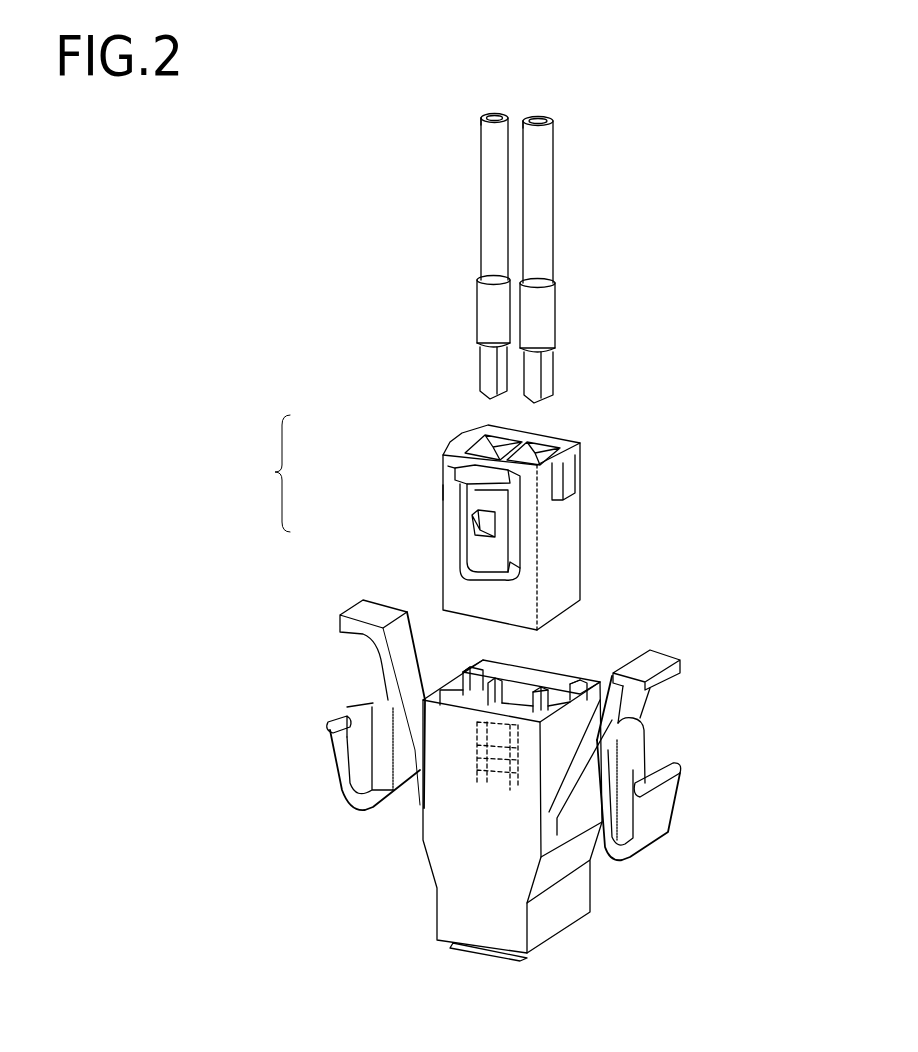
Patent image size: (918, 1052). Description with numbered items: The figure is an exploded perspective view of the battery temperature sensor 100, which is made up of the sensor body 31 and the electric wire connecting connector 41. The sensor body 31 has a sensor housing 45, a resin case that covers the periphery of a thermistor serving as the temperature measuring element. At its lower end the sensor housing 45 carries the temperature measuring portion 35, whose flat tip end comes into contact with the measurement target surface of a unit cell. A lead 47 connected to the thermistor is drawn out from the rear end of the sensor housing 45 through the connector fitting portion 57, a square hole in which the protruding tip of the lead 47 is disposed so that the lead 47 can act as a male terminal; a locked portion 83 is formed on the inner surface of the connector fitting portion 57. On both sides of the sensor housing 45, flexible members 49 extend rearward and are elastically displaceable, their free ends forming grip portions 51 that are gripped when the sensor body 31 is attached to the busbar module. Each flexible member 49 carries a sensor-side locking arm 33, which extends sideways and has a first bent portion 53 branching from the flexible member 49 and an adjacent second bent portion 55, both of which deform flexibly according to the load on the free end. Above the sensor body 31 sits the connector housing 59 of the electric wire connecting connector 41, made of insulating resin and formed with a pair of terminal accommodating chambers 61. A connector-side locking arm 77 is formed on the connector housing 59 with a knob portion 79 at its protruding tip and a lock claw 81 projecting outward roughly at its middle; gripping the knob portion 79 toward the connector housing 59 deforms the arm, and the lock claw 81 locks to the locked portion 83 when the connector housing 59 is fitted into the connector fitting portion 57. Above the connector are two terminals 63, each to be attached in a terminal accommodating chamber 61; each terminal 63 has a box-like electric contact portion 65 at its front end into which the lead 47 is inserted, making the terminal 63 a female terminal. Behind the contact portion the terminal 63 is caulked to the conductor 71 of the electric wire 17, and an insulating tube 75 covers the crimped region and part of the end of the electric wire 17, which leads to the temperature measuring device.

The battery temperature sensor 100 is at (265, 473).
The electric wire 17 is at (487, 205).
The conductor 71 is at (497, 114).
The insulating tube 75 is at (483, 312).
The terminal 63 is at (521, 361).
The electric contact portion 65 is at (490, 383).
The electric wire connecting connector 41 is at (432, 486).
The connector housing 59 is at (514, 512).
The terminal accommodating chamber 61 is at (490, 443).
The connector-side locking arm 77 is at (500, 543).
The knob portion 79 is at (448, 470).
The lock claw 81 is at (478, 525).
The sensor body 31 is at (514, 715).
The sensor housing 45 is at (448, 825).
The temperature measuring portion 35 is at (483, 957).
The lead 47 is at (478, 682).
The connector fitting portion 57 is at (542, 700).
The locked portion 83 is at (525, 695).
The grip portion 51 is at (360, 608).
The flexible member 49 is at (380, 652).
The first bent portion 53 is at (375, 710).
The second bent portion 55 is at (357, 812).
The sensor-side locking arm 33 is at (514, 745).